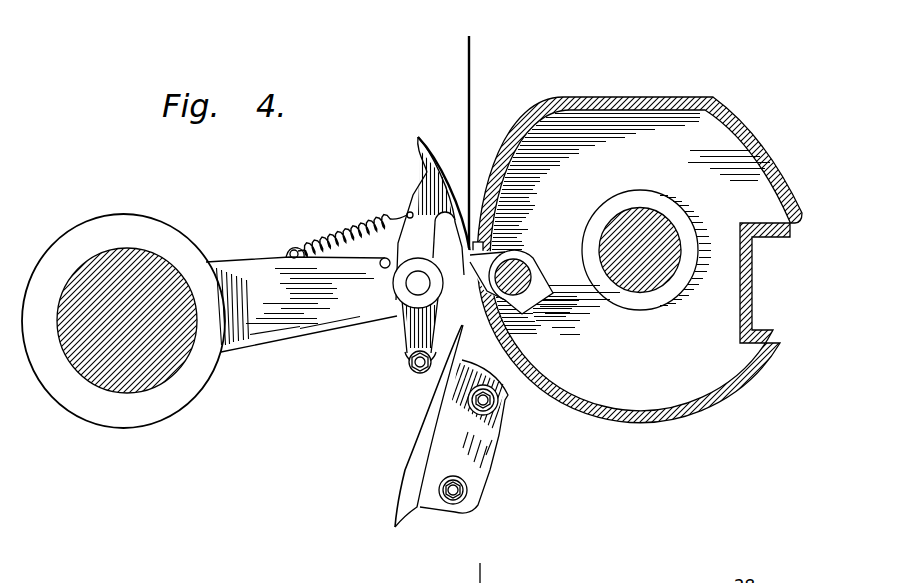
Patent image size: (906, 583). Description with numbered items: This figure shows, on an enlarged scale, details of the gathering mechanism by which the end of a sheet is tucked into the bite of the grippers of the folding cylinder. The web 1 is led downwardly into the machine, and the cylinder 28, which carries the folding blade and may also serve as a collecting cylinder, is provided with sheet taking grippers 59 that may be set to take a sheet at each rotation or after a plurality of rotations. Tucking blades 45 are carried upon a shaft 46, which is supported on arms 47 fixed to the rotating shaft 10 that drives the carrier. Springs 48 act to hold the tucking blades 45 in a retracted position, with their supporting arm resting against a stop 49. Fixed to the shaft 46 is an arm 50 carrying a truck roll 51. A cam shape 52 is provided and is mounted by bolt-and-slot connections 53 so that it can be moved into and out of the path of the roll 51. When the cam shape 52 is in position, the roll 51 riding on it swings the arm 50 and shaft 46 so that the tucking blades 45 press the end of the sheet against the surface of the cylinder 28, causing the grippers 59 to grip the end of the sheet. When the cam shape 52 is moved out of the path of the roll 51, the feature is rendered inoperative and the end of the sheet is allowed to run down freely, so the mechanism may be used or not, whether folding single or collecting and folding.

The web 1 is at (470, 88).
The rotating shaft 10 is at (147, 378).
The cylinder 28 is at (680, 120).
The tucking blades 45 is at (430, 150).
The shaft 46 is at (416, 287).
The arms 47 is at (272, 330).
The springs 48 is at (387, 217).
The stop 49 is at (382, 260).
The arm 50 is at (413, 293).
The truck roll 51 is at (413, 377).
The cam shape 52 is at (400, 483).
The bolt-and-slot connections 53 is at (490, 412).
The grippers 59 is at (480, 262).